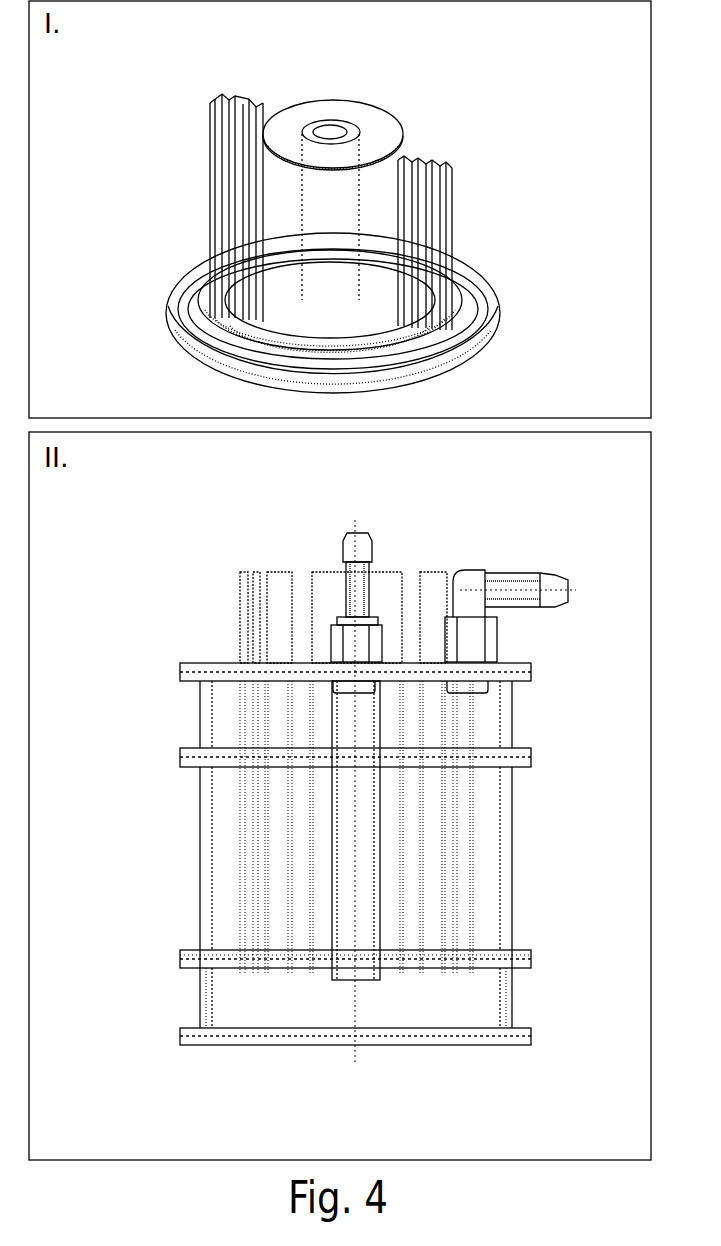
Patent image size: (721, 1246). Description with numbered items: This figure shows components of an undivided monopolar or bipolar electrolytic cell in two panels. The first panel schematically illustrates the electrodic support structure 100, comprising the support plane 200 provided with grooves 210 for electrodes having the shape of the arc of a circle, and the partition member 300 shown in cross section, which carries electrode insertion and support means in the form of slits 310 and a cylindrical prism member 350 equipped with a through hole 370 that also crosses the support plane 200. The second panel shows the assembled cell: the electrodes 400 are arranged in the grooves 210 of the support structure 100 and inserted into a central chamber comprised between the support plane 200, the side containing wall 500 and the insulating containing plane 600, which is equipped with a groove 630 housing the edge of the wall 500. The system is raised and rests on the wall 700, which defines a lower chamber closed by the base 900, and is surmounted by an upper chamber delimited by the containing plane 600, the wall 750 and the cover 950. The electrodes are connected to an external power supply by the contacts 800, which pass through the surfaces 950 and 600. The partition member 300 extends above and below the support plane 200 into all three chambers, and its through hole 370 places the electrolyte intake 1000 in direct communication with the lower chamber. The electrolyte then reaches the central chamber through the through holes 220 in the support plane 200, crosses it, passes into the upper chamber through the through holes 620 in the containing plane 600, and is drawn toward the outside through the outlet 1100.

The electrodic support structure 100 is at (487, 180).
The support plane 200 is at (492, 325).
The grooves for electrodes 210 is at (217, 315).
The through holes 220 is at (513, 998).
The partition member 300 is at (415, 147).
The slits 310 is at (217, 193).
The prism member 350 is at (367, 107).
The through hole 370 is at (332, 135).
The electrodes 400 is at (480, 837).
The side containing wall 500 is at (513, 913).
The insulating containing plane 600 is at (530, 757).
The through holes 620 is at (230, 750).
The groove 630 is at (513, 747).
The wall 700 is at (512, 968).
The wall 750 is at (513, 720).
The contacts 800 is at (273, 727).
The base 900 is at (197, 1043).
The cover 950 is at (177, 668).
The intake 1000 is at (363, 518).
The outlet 1100 is at (523, 563).